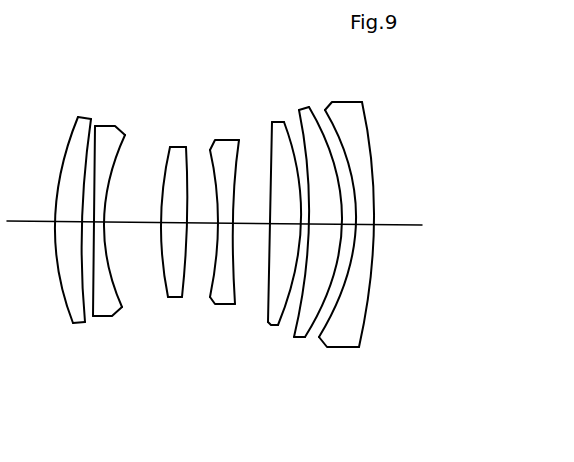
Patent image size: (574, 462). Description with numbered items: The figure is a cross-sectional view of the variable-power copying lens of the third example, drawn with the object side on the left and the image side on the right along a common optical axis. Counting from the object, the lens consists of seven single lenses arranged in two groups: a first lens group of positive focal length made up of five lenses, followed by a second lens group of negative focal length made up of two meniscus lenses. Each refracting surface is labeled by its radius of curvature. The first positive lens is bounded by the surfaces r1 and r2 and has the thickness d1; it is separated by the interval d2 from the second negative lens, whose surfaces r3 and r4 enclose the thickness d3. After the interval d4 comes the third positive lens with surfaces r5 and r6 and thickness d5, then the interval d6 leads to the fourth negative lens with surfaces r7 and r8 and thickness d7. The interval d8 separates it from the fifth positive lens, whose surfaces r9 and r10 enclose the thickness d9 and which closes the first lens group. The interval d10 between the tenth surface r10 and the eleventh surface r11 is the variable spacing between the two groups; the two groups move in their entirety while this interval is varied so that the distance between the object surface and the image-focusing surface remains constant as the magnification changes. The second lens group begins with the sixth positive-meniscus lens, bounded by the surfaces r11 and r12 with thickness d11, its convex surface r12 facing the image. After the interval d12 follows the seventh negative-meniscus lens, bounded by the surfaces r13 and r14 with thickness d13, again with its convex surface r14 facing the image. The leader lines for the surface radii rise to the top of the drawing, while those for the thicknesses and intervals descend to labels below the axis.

The radius of curvature of the first surface r1 is at (78, 117).
The radius of curvature of the second surface r2 is at (91, 119).
The radius of curvature of the third surface r3 is at (95, 126).
The radius of curvature of the fourth surface r4 is at (125, 135).
The radius of curvature of the fifth surface r5 is at (170, 147).
The radius of curvature of the sixth surface r6 is at (186, 147).
The radius of curvature of the seventh surface r7 is at (210, 150).
The radius of curvature of the eighth surface r8 is at (239, 140).
The radius of curvature of the ninth surface r9 is at (272, 122).
The radius of curvature of the tenth surface r10 is at (284, 122).
The radius of curvature of the eleventh surface r11 is at (299, 110).
The radius of curvature of the twelfth surface r12 is at (309, 107).
The radius of curvature of the thirteenth surface r13 is at (325, 110).
The radius of curvature of the fourteenth surface r14 is at (362, 102).
The first lens thickness d1 is at (67, 222).
The second inter-lens interval d2 is at (88, 222).
The third lens thickness d3 is at (108, 222).
The fourth inter-lens interval d4 is at (132, 222).
The fifth lens thickness d5 is at (178, 222).
The sixth inter-lens interval d6 is at (202, 222).
The seventh lens thickness d7 is at (225, 222).
The eighth inter-lens interval d8 is at (255, 222).
The ninth lens thickness d9 is at (290, 222).
The tenth inter-lens interval d10 is at (323, 222).
The eleventh lens thickness d11 is at (348, 222).
The twelfth inter-lens interval d12 is at (365, 222).
The thirteenth lens thickness d13 is at (376, 222).